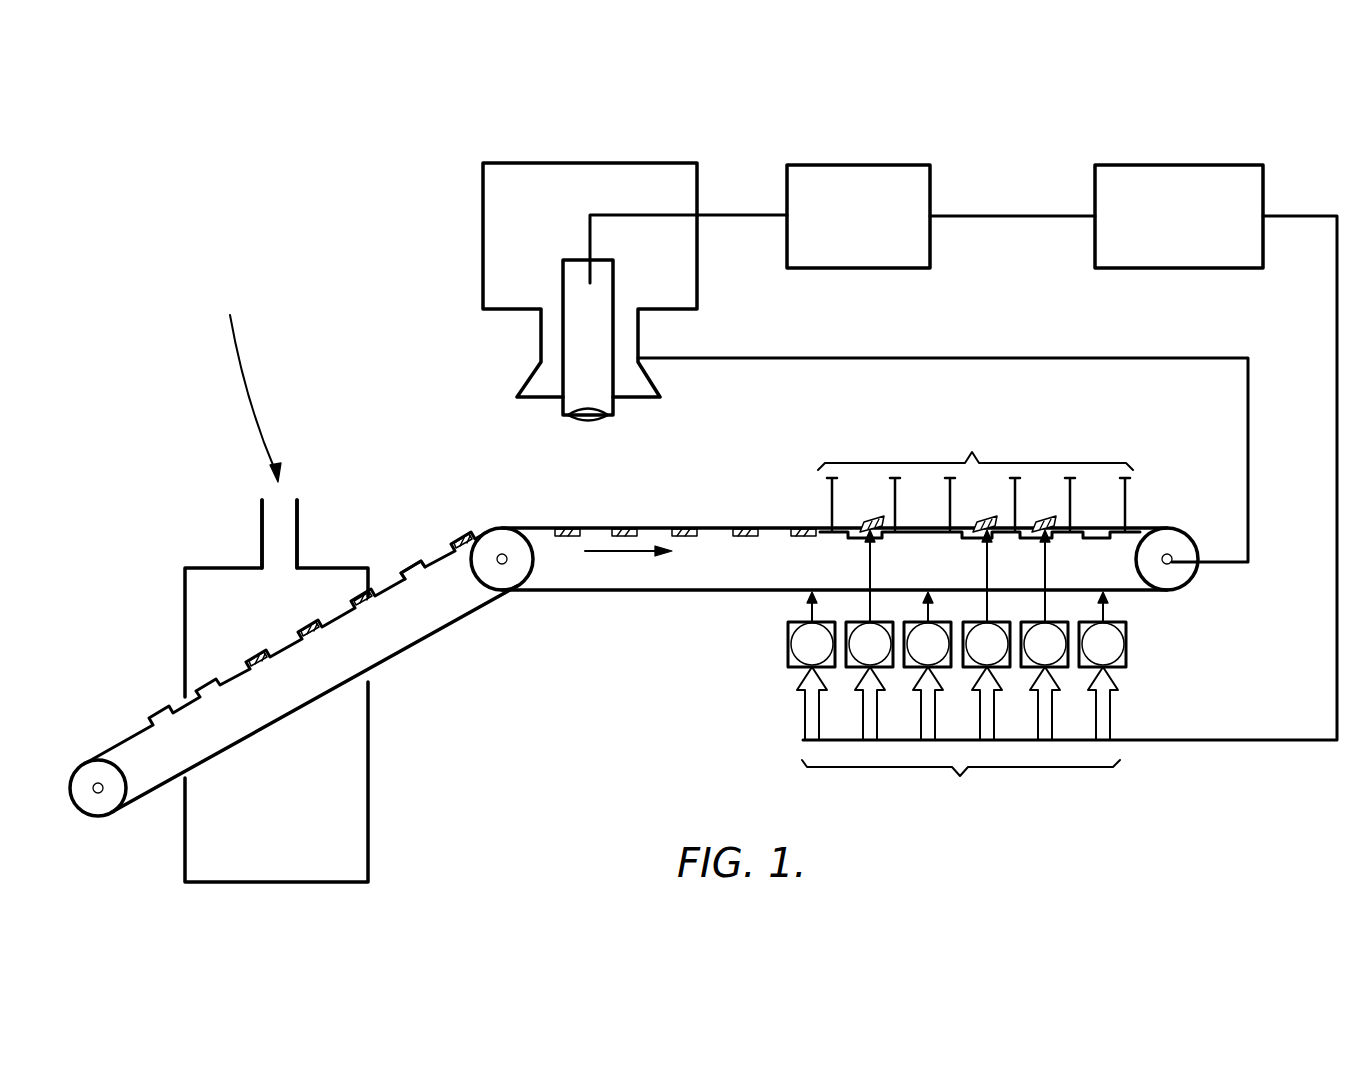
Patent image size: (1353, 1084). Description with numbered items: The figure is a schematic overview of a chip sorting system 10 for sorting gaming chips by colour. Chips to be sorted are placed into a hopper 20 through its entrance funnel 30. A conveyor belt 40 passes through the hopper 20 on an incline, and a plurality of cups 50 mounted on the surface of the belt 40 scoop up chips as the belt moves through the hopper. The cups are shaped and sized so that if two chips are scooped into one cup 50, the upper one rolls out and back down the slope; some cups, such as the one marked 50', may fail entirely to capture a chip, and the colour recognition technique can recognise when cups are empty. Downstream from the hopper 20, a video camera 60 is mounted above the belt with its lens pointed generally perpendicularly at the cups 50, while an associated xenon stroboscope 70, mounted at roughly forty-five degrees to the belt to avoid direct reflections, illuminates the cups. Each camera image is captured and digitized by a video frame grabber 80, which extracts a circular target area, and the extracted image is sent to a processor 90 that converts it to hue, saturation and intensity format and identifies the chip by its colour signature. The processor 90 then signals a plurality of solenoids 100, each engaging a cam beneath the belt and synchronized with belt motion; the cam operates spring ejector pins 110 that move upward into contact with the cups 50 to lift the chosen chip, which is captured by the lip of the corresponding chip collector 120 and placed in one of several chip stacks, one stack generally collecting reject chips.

The chip sorting system 10 is at (512, 757).
The hopper 20 is at (185, 600).
The entrance funnel 30 is at (262, 513).
The conveyor belt 40 is at (477, 605).
The cup 50 is at (612, 640).
The empty cup 50' is at (418, 537).
The video camera 60 is at (618, 412).
The xenon stroboscope 70 is at (530, 374).
The video frame grabber 80 is at (890, 172).
The processor 90 is at (1213, 172).
The solenoid 100 is at (957, 718).
The spring ejector pin 110 is at (812, 605).
The chip collector 120 is at (975, 476).